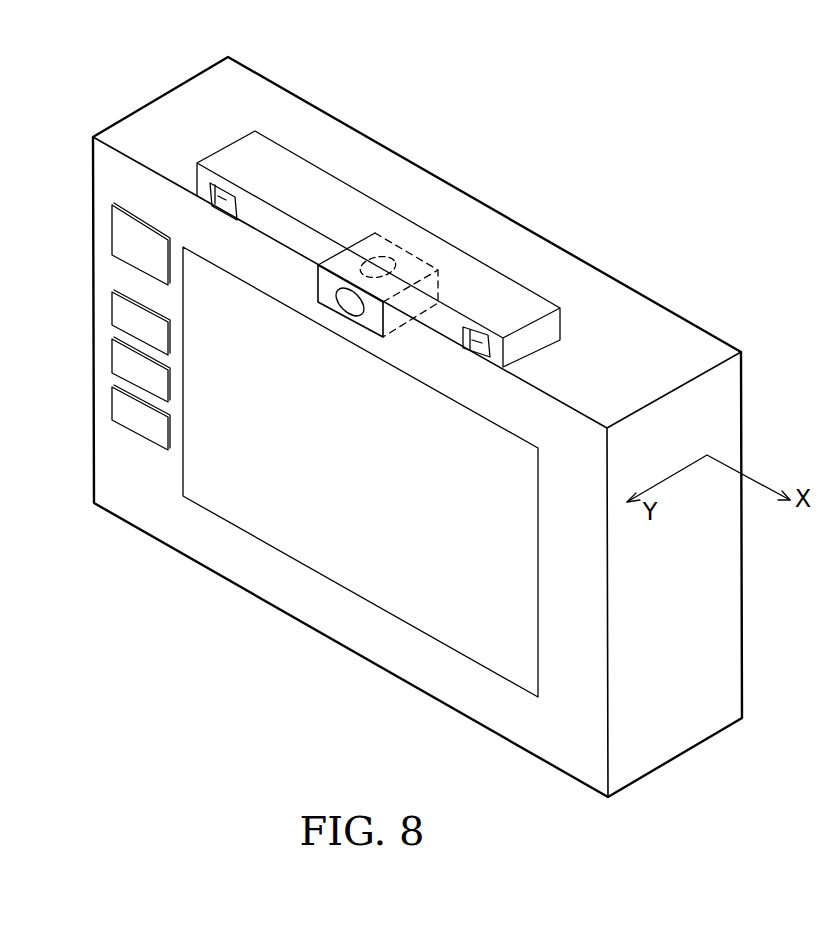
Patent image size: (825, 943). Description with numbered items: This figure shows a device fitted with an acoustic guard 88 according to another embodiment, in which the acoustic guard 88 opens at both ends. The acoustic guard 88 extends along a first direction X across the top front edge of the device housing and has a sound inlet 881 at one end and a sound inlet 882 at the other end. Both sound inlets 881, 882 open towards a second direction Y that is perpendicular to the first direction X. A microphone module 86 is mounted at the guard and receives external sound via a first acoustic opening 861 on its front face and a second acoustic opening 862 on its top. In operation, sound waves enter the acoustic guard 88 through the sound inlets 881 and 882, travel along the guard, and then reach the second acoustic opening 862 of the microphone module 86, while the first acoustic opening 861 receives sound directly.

The microphone module 86 is at (327, 278).
The first acoustic opening 861 is at (350, 305).
The second acoustic opening 862 is at (385, 262).
The acoustic guard 88 is at (517, 305).
The sound inlet 881 is at (464, 328).
The sound inlet 882 is at (215, 185).